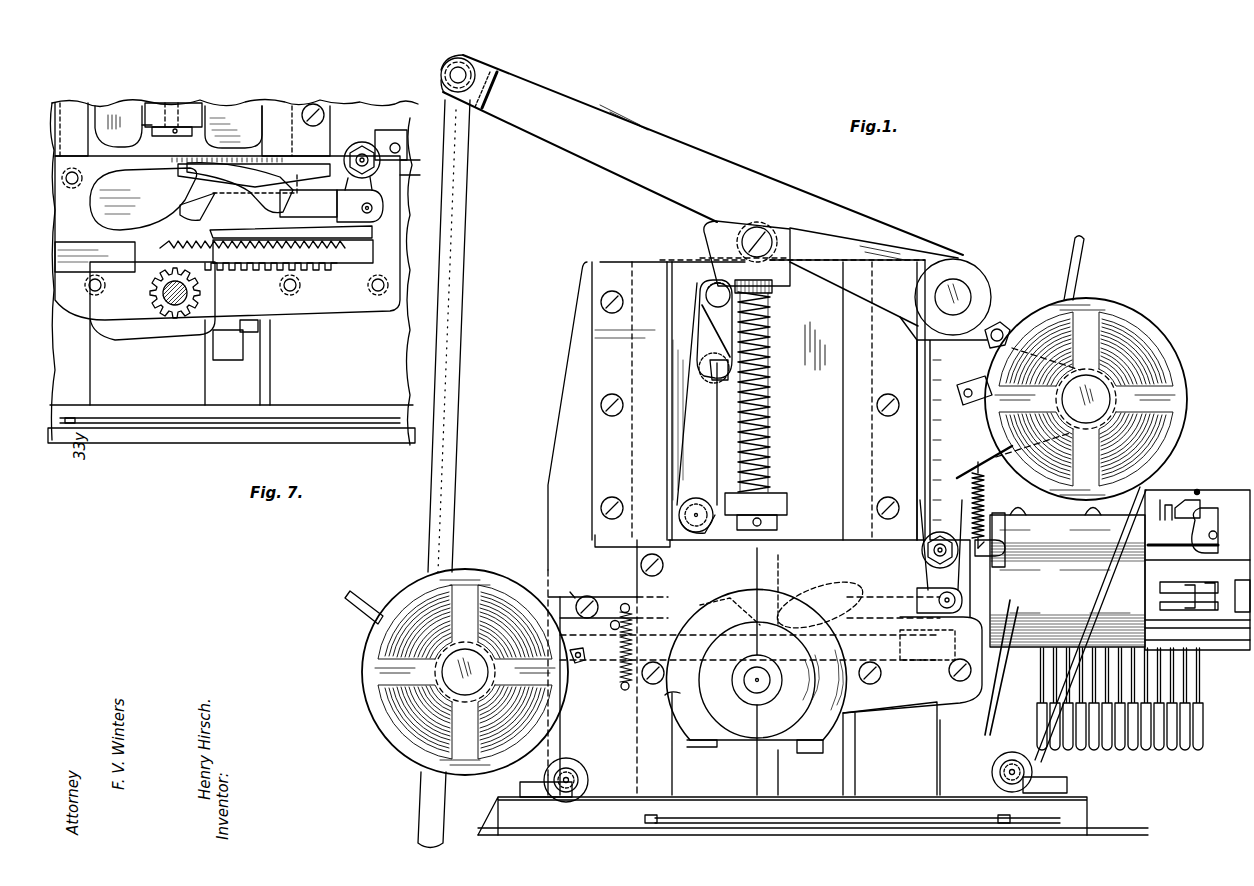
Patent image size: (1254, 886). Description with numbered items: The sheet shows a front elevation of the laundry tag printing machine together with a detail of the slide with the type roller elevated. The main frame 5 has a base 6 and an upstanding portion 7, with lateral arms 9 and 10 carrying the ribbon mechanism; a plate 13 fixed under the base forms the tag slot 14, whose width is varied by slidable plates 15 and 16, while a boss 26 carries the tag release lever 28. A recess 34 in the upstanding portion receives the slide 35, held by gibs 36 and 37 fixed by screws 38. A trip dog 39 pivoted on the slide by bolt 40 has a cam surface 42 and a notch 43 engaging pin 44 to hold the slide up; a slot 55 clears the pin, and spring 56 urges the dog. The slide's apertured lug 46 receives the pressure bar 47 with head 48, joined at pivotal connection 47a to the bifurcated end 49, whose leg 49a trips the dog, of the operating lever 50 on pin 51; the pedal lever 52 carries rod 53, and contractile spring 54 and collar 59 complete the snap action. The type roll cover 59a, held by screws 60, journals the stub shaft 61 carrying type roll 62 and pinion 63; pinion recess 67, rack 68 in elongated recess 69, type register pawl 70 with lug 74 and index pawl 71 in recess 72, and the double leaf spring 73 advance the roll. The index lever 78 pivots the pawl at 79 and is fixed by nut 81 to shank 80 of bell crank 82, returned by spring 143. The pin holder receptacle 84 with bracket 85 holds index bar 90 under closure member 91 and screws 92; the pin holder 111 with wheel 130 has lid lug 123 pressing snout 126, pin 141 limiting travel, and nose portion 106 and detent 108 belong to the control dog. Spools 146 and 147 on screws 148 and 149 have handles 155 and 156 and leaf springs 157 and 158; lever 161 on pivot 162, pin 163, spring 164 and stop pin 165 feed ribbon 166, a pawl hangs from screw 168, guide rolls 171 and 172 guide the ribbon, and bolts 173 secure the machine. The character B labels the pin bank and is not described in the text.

In FIG. 1, the main frame 5 is at (548, 508).
In FIG. 1, the base 6 is at (1078, 810).
In FIG. 7, the base 6 is at (340, 400).
In FIG. 1, the upstanding portion 7 is at (570, 410).
In FIG. 7, the upstanding portion 7 is at (408, 350).
In FIG. 1, the lateral arm 9 is at (759, 541).
In FIG. 1, the lateral arm 10 is at (1010, 462).
In FIG. 1, the plate 13 is at (1100, 828).
In FIG. 7, the plate 13 is at (200, 428).
In FIG. 1, the slot 14 is at (725, 810).
In FIG. 7, the slot 14 is at (295, 418).
In FIG. 1, the slidable plate 15 is at (985, 818).
In FIG. 1, the slidable plate 16 is at (640, 818).
In FIG. 1, the boss 26 is at (840, 750).
In FIG. 7, the boss 26 is at (200, 370).
In FIG. 1, the tag release lever 28 is at (809, 755).
In FIG. 7, the tag release lever 28 is at (228, 360).
In FIG. 1, the recess 34 is at (635, 270).
In FIG. 1, the slide 35 is at (802, 344).
In FIG. 7, the slide 35 is at (232, 103).
In FIG. 1, the gib 36 is at (610, 450).
In FIG. 7, the gib 36 is at (68, 100).
In FIG. 1, the gib 37 is at (880, 378).
In FIG. 7, the gib 37 is at (335, 80).
In FIG. 1, the screws 38 is at (622, 302).
In FIG. 1, the trip dog 39 is at (700, 450).
In FIG. 7, the trip dog 39 is at (110, 103).
In FIG. 1, the bolt 40 is at (700, 532).
In FIG. 1, the cam surface 42 is at (695, 300).
In FIG. 1, the notch 43 is at (728, 378).
In FIG. 1, the pin 44 is at (710, 382).
In FIG. 1, the apertured lug 46 is at (778, 500).
In FIG. 7, the apertured lug 46 is at (190, 101).
In FIG. 1, the pressure bar 47 is at (770, 430).
In FIG. 7, the pressure bar 47 is at (175, 86).
In FIG. 1, the pivotal connection 47a is at (760, 232).
In FIG. 1, the apertured head 48 is at (775, 290).
In FIG. 1, the bifurcated end 49 is at (780, 245).
In FIG. 1, the leg 49a is at (710, 232).
In FIG. 1, the operating lever 50 is at (898, 250).
In FIG. 1, the pin 51 is at (958, 285).
In FIG. 1, the pedal lever 52 is at (640, 140).
In FIG. 1, the rod 53 is at (460, 222).
In FIG. 1, the contractile spring 54 is at (770, 375).
In FIG. 1, the slot 55 is at (710, 283).
In FIG. 1, the spring 56 is at (685, 535).
In FIG. 1, the collar 59 is at (777, 525).
In FIG. 7, the collar 59 is at (162, 140).
In FIG. 1, the type roll cover 59a is at (915, 705).
In FIG. 1, the screws 60 is at (642, 565).
In FIG. 1, the stub shaft 61 is at (750, 688).
In FIG. 7, the stub shaft 61 is at (188, 293).
In FIG. 1, the type roll 62 is at (735, 745).
In FIG. 7, the pinion 63 is at (150, 293).
In FIG. 7, the recess 67 is at (175, 315).
In FIG. 1, the rack 68 is at (920, 663).
In FIG. 7, the rack 68 is at (365, 255).
In FIG. 7, the elongated recess 69 is at (95, 257).
In FIG. 1, the type register pawl 70 is at (775, 600).
In FIG. 7, the type register pawl 70 is at (180, 215).
In FIG. 1, the index pawl 71 is at (885, 618).
In FIG. 7, the index pawl 71 is at (290, 180).
In FIG. 7, the recess 72 is at (143, 199).
In FIG. 7, the double leaf spring 73 is at (205, 165).
In FIG. 7, the lug 74 is at (225, 226).
In FIG. 1, the index lever 78 is at (920, 580).
In FIG. 7, the index lever 78 is at (345, 185).
In FIG. 1, the pivot 79 is at (962, 600).
In FIG. 1, the shank portion 80 is at (945, 590).
In FIG. 7, the shank portion 80 is at (367, 200).
In FIG. 1, the nut 81 is at (940, 532).
In FIG. 7, the nut 81 is at (362, 142).
In FIG. 1, the bell crank 82 is at (1000, 545).
In FIG. 7, the bell crank 82 is at (403, 128).
In FIG. 1, the pin holder receptacle 84 is at (1067, 581).
In FIG. 7, the pin holder receptacle 84 is at (417, 186).
In FIG. 1, the bracket 85 is at (990, 742).
In FIG. 1, the index bar 90 is at (1157, 501).
In FIG. 7, the index bar 90 is at (420, 128).
In FIG. 1, the closure member 91 is at (1080, 505).
In FIG. 1, the screws 92 is at (1053, 499).
In FIG. 1, the nose portion 106 is at (1028, 672).
In FIG. 7, the detent 108 is at (258, 326).
In FIG. 1, the pin holder 111 is at (1215, 705).
In FIG. 1, the lug 123 is at (1222, 505).
In FIG. 1, the snout 126 is at (1209, 482).
In FIG. 1, the wheel 130 is at (1180, 590).
In FIG. 1, the pin 141 is at (1180, 498).
In FIG. 1, the spring 143 is at (985, 462).
In FIG. 1, the spool 146 is at (410, 590).
In FIG. 1, the spool 147 is at (1120, 318).
In FIG. 1, the screw 148 is at (440, 677).
In FIG. 1, the screw 149 is at (1110, 401).
In FIG. 1, the operating handle 155 is at (352, 590).
In FIG. 1, the operating handle 156 is at (1090, 225).
In FIG. 1, the leaf spring 157 is at (585, 655).
In FIG. 1, the leaf spring 158 is at (967, 375).
In FIG. 1, the lever 161 is at (620, 598).
In FIG. 1, the pivot 162 is at (578, 592).
In FIG. 1, the pin 163 is at (730, 612).
In FIG. 1, the spring 164 is at (618, 684).
In FIG. 1, the stop pin 165 is at (611, 630).
In FIG. 1, the ribbon 166 is at (900, 785).
In FIG. 1, the screw 168 is at (1003, 322).
In FIG. 1, the guide roll 171 is at (585, 775).
In FIG. 1, the guide roll 172 is at (1012, 752).
In FIG. 1, the bolts 173 is at (518, 790).
In FIG. 1, the pins B is at (1140, 745).